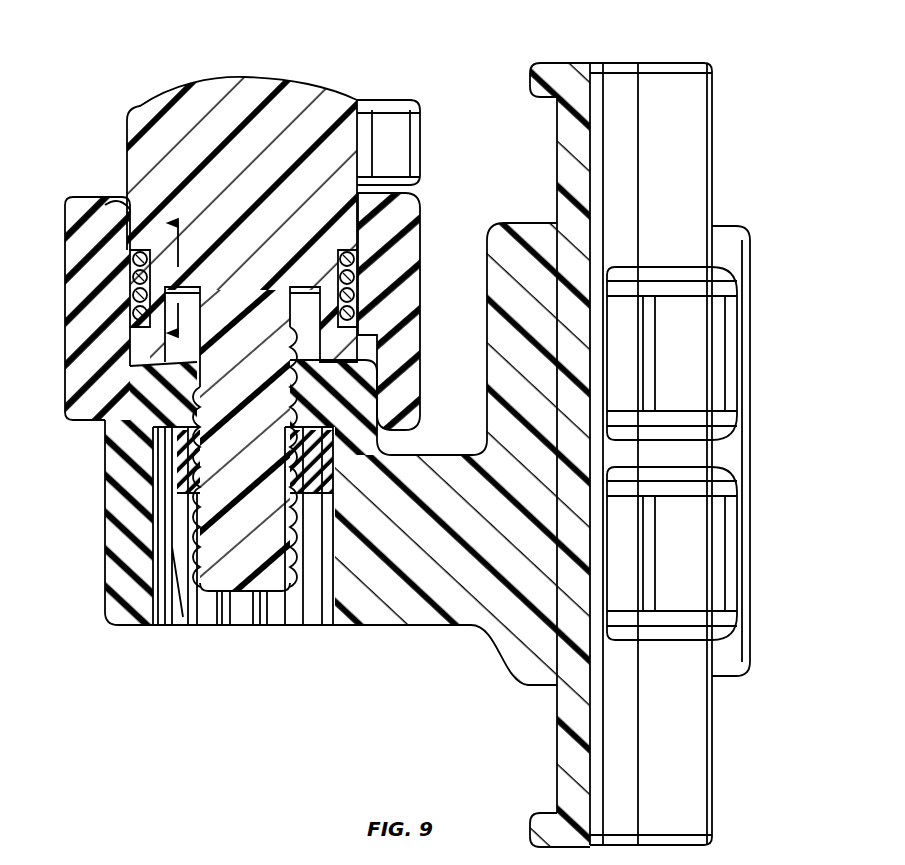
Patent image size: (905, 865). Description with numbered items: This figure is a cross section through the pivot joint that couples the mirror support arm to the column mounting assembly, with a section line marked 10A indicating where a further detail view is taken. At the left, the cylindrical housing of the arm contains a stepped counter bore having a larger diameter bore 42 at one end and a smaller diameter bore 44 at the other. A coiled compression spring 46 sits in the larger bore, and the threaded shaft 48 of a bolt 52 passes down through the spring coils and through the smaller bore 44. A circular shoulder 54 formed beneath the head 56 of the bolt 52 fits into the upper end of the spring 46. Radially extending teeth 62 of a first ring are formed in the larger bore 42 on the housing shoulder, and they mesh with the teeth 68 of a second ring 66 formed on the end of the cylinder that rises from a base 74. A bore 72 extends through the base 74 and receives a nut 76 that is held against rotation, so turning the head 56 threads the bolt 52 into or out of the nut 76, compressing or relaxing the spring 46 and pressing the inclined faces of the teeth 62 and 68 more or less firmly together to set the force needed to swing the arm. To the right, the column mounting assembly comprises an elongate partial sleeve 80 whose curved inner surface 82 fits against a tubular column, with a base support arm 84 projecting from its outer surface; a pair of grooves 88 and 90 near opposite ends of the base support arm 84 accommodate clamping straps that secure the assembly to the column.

The section line 10A is at (196, 276).
The larger diameter bore 42 is at (103, 203).
The smaller diameter bore 44 is at (172, 600).
The coiled compression spring 46 is at (128, 260).
The threaded shaft 48 is at (357, 290).
The bolt 52 is at (110, 115).
The circular shoulder 54 is at (73, 230).
The head 56 is at (163, 97).
The radially extending teeth 62 is at (183, 292).
The second ring 66 is at (320, 330).
The radially extending teeth 68 is at (196, 290).
The bore 72 is at (300, 354).
The base 74 is at (150, 400).
The nut 76 is at (177, 472).
The elongate partial sleeve 80 is at (741, 160).
The curved inner surface 82 is at (690, 100).
The base support arm 84 is at (420, 617).
The groove 88 is at (557, 130).
The groove 90 is at (556, 762).